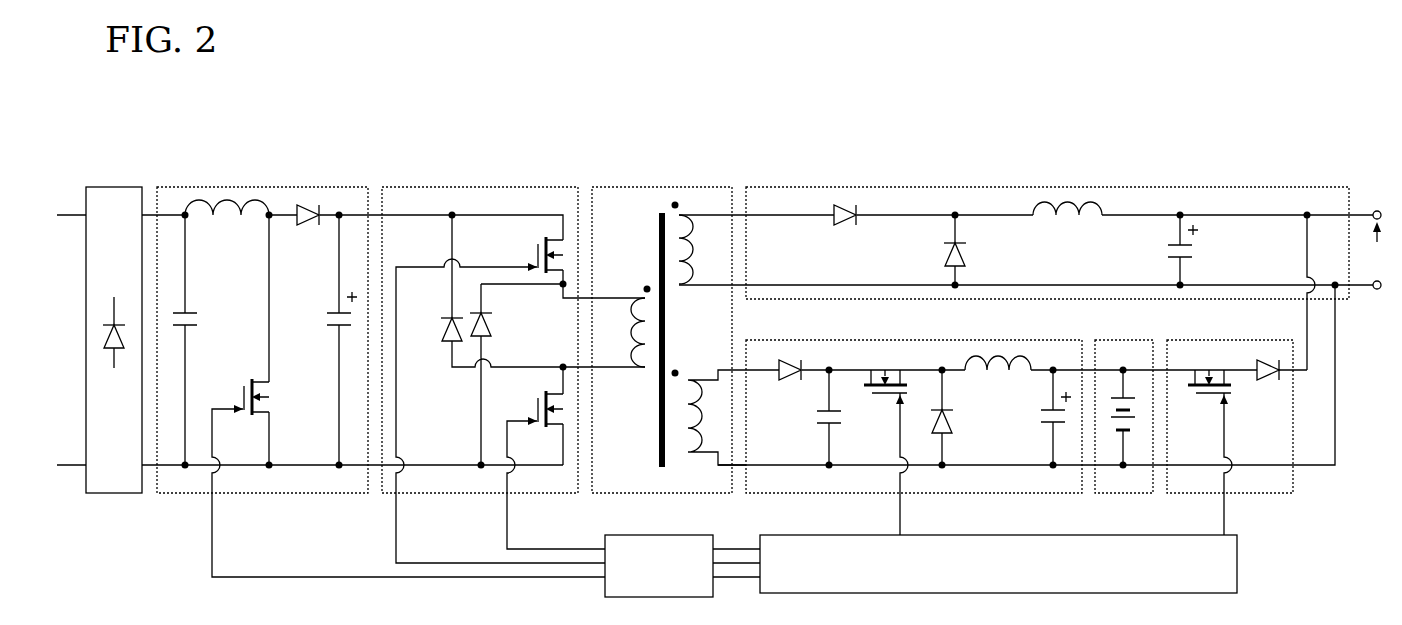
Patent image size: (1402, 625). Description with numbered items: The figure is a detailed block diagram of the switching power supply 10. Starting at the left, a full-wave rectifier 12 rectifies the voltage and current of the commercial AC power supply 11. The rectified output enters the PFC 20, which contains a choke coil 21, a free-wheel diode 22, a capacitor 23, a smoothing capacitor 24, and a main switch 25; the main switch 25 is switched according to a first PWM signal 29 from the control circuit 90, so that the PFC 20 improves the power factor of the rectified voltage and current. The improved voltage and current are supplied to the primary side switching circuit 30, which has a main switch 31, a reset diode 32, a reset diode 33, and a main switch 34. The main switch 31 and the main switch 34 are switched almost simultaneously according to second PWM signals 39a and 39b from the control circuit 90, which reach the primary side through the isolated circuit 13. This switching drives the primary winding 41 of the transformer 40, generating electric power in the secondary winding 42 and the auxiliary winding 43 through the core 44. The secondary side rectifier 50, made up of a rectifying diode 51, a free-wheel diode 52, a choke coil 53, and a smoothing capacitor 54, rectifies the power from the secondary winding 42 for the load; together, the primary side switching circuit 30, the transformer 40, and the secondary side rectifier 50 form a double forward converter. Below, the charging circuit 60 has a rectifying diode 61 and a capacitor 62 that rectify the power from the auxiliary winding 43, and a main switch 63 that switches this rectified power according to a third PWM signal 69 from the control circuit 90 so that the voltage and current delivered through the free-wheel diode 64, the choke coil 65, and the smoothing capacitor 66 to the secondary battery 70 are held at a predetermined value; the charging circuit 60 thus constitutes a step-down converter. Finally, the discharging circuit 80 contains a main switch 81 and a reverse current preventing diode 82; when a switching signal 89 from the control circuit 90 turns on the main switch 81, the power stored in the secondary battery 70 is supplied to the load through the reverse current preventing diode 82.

The switching power supply 10 is at (895, 118).
The commercial AC power supply 11 is at (56, 339).
The full-wave rectifier 12 is at (118, 187).
The isolated circuit 13 is at (663, 535).
The PFC 20 is at (240, 187).
The choke coil 21 is at (225, 228).
The free-wheel diode 22 is at (308, 228).
The capacitor 23 is at (190, 313).
The smoothing capacitor 24 is at (324, 317).
The main switch 25 is at (245, 384).
The first PWM signal 29 is at (212, 530).
The primary side switching circuit 30 is at (476, 187).
The main switch 31 is at (538, 255).
The reset diode 32 is at (440, 335).
The reset diode 33 is at (485, 317).
The main switch 34 is at (538, 410).
The second PWM signal 39a is at (396, 530).
The second PWM signal 39b is at (507, 530).
The transformer 40 is at (665, 187).
The primary winding 41 is at (632, 297).
The secondary winding 42 is at (683, 288).
The auxiliary winding 43 is at (690, 380).
The core 44 is at (658, 430).
The secondary side rectifier 50 is at (1040, 187).
The rectifying diode 51 is at (840, 228).
The free-wheel diode 52 is at (945, 250).
The choke coil 53 is at (1055, 230).
The smoothing capacitor 54 is at (1170, 250).
The charging circuit 60 is at (922, 340).
The rectifying diode 61 is at (785, 382).
The capacitor 62 is at (817, 415).
The main switch 63 is at (883, 395).
The free-wheel diode 64 is at (950, 425).
The choke coil 65 is at (1035, 355).
The smoothing capacitor 66 is at (1040, 415).
The third PWM signal 69 is at (900, 530).
The secondary battery 70 is at (1125, 340).
The discharging circuit 80 is at (1232, 340).
The main switch 81 is at (1210, 395).
The reverse current preventing diode 82 is at (1262, 378).
The switching signal 89 is at (1222, 530).
The control circuit 90 is at (1072, 535).